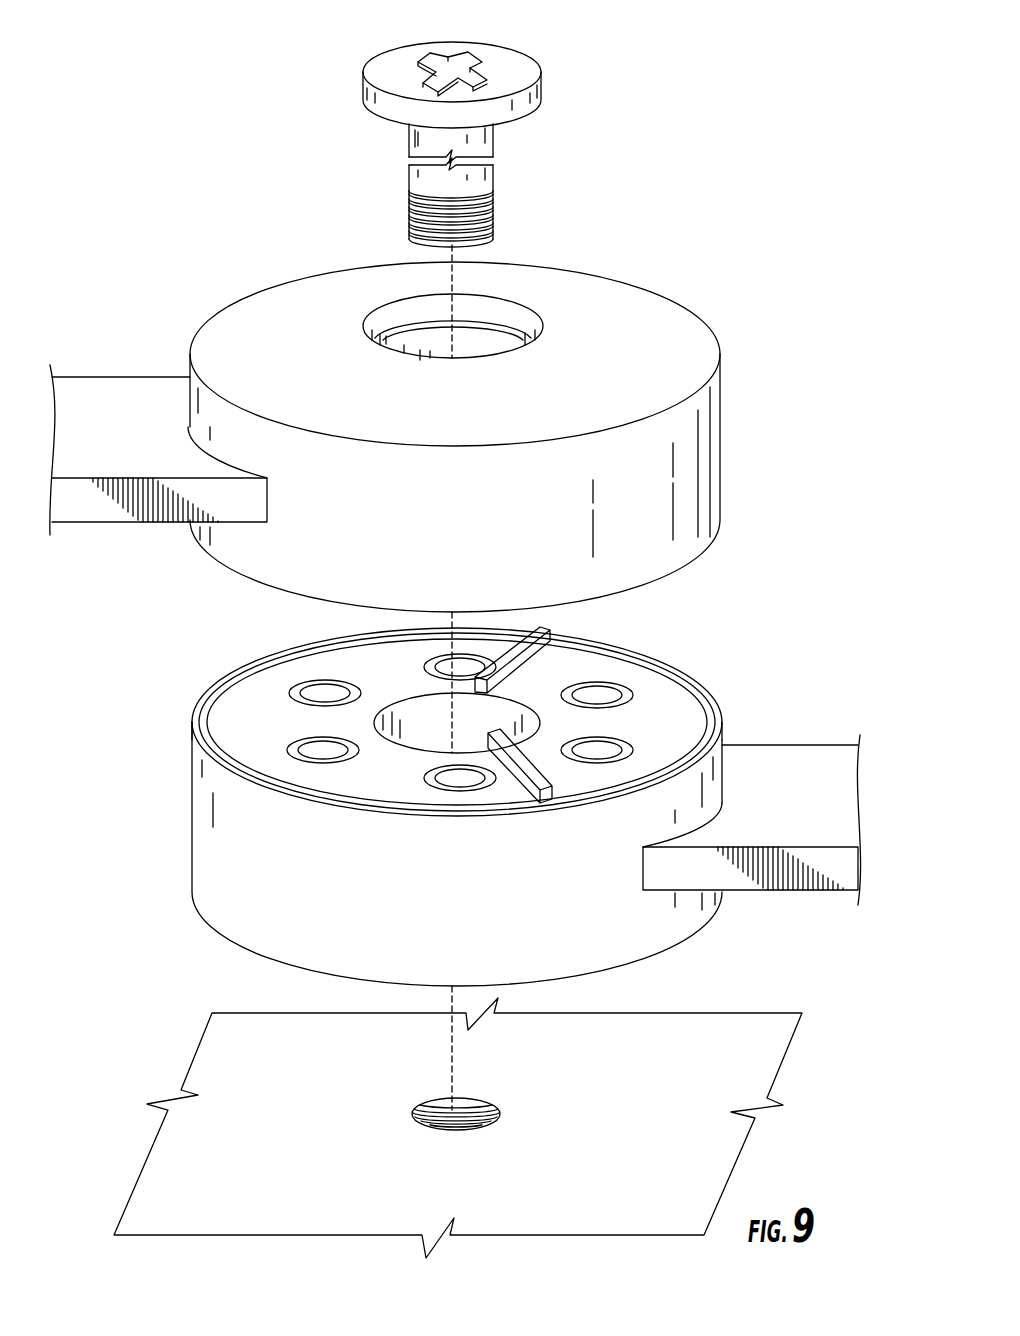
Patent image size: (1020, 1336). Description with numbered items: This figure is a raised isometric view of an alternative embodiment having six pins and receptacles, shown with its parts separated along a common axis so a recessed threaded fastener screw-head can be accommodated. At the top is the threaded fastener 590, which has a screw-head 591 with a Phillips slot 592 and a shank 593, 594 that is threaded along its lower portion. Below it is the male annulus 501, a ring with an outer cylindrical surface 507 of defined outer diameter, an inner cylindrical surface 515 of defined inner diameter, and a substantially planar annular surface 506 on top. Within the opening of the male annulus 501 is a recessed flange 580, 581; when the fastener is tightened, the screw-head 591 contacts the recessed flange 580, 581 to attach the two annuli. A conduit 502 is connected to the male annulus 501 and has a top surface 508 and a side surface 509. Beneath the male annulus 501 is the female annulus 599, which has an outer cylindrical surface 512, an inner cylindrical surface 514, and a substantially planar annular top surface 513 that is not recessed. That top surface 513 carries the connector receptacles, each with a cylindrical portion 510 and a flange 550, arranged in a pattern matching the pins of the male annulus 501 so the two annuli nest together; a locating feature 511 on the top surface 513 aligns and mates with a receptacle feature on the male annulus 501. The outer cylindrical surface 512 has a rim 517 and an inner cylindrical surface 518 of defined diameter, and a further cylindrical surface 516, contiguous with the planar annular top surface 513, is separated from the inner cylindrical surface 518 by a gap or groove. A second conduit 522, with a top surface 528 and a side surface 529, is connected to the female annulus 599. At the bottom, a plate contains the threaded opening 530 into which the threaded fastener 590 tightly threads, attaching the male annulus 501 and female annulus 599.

The threaded fastener 590 is at (482, 124).
The screw-head 591 is at (395, 62).
The Phillips slot 592 is at (457, 65).
The shank 593 is at (482, 143).
The shank 594 is at (410, 212).
The male annulus 501 is at (408, 404).
The substantially planar annular surface 506 is at (670, 332).
The outer cylindrical surface 507 is at (705, 490).
The inner cylindrical surface 515 is at (527, 278).
The recessed flange 580 is at (502, 268).
The recessed flange 581 is at (477, 318).
The conduit 502 is at (150, 431).
The top surface 508 is at (143, 400).
The side surface 509 is at (95, 507).
The cylindrical portion 510 is at (494, 791).
The locating feature 511 is at (505, 706).
The outer cylindrical surface 512 is at (235, 862).
The substantially planar annular top surface 513 is at (253, 711).
The inner cylindrical surface 514 is at (425, 720).
The flange 550 is at (632, 695).
The cylindrical surface 516 is at (712, 752).
The rim 517 is at (710, 700).
The inner cylindrical surface 518 is at (677, 685).
The conduit 522 is at (759, 796).
The top surface 528 is at (783, 827).
The side surface 529 is at (737, 877).
The female annulus 599 is at (458, 1117).
The threaded opening 530 is at (428, 1123).